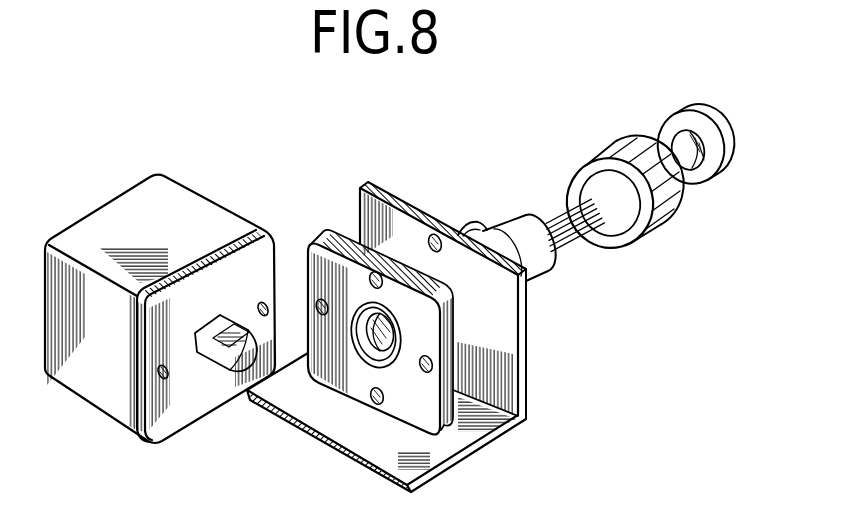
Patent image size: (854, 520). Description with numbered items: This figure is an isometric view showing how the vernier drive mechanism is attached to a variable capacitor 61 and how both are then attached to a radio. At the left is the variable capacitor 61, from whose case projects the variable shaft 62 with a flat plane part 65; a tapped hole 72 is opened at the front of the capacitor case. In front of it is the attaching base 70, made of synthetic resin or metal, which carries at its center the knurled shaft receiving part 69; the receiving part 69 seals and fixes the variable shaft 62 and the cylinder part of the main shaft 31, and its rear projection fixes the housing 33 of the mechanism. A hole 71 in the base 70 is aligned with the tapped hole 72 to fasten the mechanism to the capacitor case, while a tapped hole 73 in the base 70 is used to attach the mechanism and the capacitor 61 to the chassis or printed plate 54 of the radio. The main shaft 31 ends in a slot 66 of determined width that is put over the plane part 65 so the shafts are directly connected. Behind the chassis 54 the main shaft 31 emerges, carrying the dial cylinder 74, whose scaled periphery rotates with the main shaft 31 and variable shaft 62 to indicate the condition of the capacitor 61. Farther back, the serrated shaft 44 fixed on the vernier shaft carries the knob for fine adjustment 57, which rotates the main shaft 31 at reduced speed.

The main shaft 31 is at (381, 321).
The housing 33 is at (465, 226).
The serrated shaft 44 is at (546, 208).
The chassis or printed plate 54 is at (402, 206).
The knob for fine adjustment 57 is at (681, 118).
The variable capacitor 61 is at (217, 210).
The variable shaft 62 is at (218, 372).
The plane part 65 is at (243, 323).
The slot 66 is at (394, 340).
The shaft receiving part 69 is at (397, 360).
The attaching base 70 is at (450, 418).
The hole 71 is at (318, 304).
The tapped hole 72 is at (158, 373).
The tapped hole 73 is at (368, 399).
The dial cylinder 74 is at (600, 144).